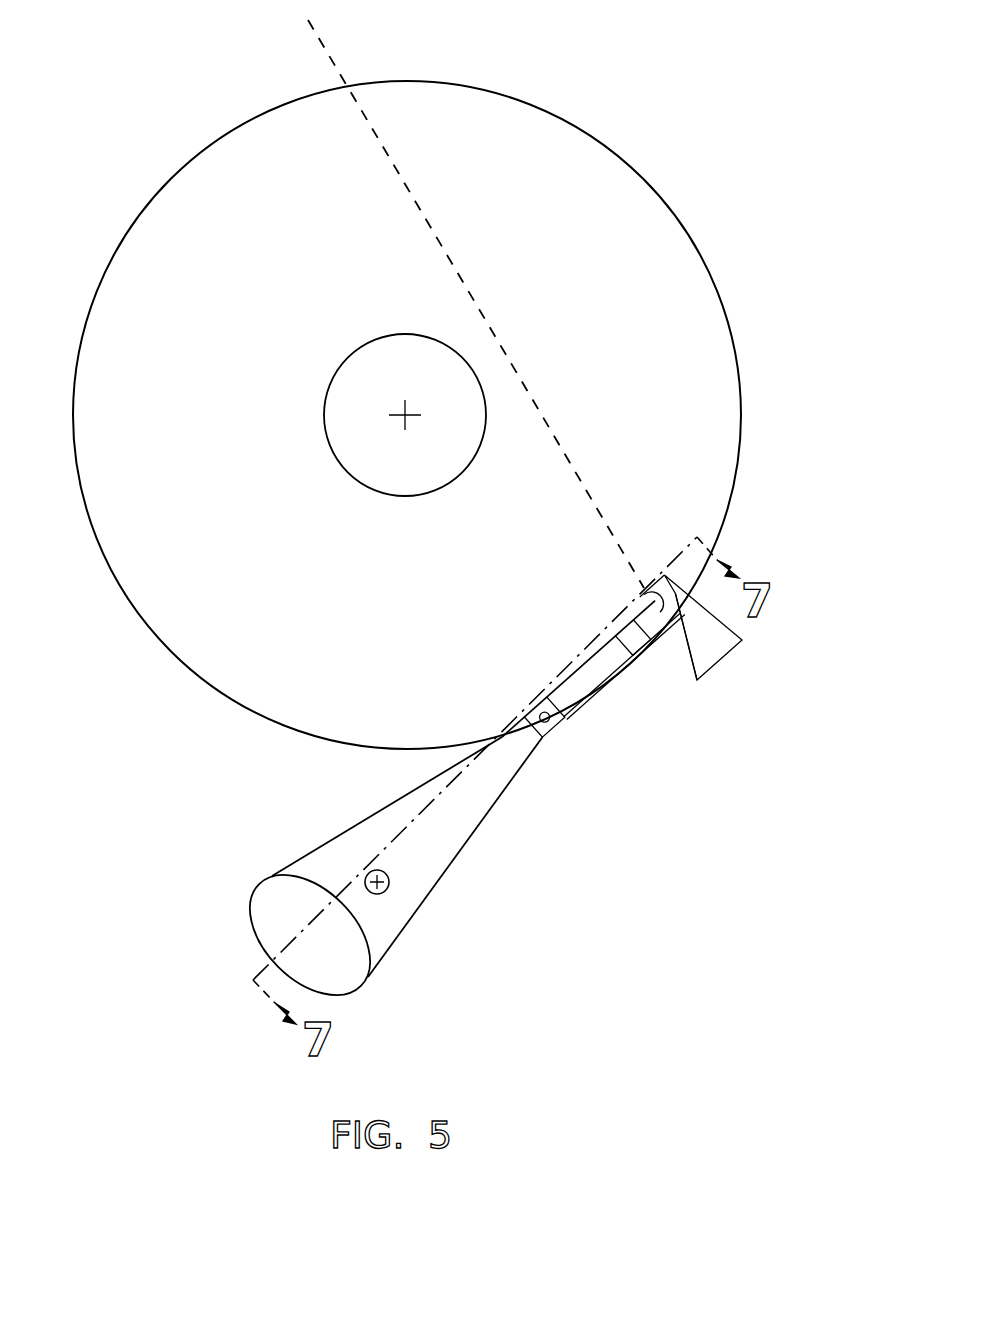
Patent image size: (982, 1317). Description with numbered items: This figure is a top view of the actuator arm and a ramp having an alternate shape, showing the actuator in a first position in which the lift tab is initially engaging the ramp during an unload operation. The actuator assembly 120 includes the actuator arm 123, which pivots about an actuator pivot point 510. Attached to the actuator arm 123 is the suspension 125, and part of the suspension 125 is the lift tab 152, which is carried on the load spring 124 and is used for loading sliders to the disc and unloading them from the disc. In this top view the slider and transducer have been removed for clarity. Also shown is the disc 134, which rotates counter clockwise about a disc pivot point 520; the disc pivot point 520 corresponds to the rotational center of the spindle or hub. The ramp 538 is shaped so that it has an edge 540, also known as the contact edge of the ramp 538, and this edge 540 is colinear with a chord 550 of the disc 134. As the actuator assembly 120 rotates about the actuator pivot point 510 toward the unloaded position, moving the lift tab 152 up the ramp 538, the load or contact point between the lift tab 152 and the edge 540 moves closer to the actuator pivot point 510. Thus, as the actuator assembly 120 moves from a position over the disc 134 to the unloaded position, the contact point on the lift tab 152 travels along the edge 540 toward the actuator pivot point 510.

The disc 134 is at (672, 213).
The disc pivot point 520 is at (404, 416).
The chord 550 is at (320, 42).
The actuator assembly 120 is at (420, 877).
The actuator arm 123 is at (478, 833).
The actuator pivot point 510 is at (389, 893).
The load spring 124 is at (602, 682).
The suspension 125 is at (568, 711).
The lift tab 152 is at (644, 588).
The ramp 538 is at (735, 645).
The edge 540 is at (691, 663).